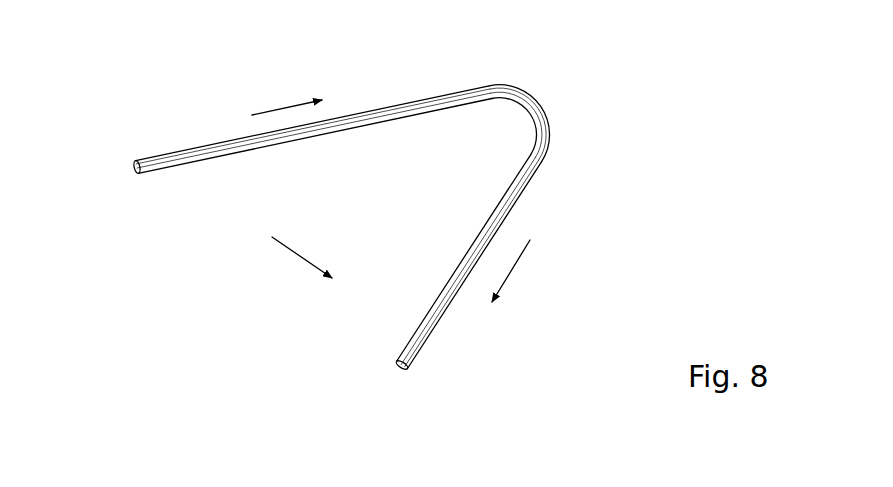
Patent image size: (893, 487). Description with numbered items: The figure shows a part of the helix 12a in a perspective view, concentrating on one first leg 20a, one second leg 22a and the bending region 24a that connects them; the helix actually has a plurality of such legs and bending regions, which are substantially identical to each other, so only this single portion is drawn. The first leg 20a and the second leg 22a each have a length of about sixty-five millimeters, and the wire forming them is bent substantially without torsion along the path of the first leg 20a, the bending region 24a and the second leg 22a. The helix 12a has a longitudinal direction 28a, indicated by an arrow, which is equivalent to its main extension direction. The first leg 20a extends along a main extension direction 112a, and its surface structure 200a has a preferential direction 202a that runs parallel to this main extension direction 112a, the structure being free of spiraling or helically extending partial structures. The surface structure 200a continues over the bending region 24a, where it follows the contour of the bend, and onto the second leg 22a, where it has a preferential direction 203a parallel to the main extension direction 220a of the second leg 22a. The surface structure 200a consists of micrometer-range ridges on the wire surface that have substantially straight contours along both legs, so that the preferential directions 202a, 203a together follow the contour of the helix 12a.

The first leg 20a is at (353, 189).
The helix 12a is at (133, 166).
The second leg 22a is at (423, 345).
The bending region 24a is at (544, 108).
The surface structure 200a is at (422, 97).
The main extension direction of the first leg 112a is at (307, 76).
The preferential direction 202a is at (284, 108).
The main extension direction of the second leg 220a is at (610, 271).
The preferential direction 203a is at (513, 268).
The longitudinal direction 28a is at (300, 258).